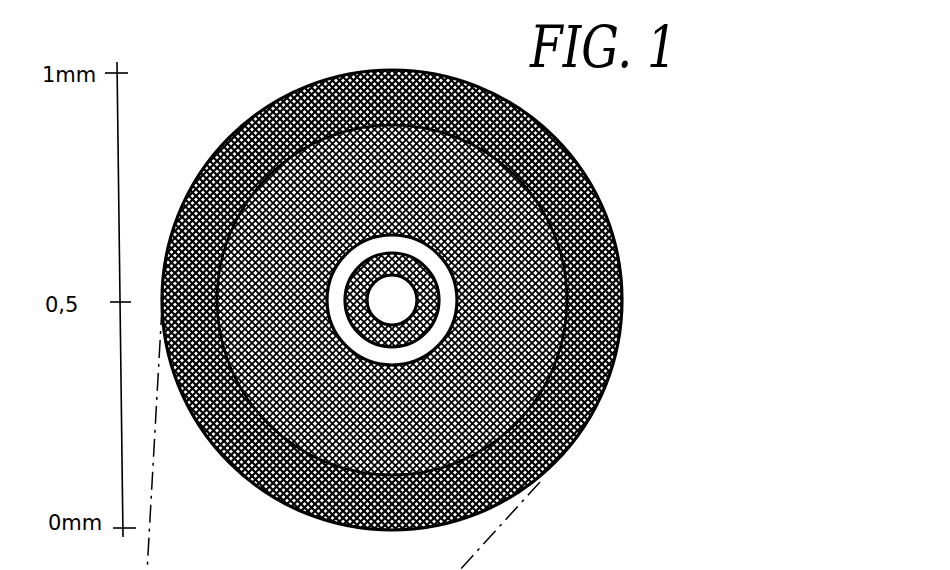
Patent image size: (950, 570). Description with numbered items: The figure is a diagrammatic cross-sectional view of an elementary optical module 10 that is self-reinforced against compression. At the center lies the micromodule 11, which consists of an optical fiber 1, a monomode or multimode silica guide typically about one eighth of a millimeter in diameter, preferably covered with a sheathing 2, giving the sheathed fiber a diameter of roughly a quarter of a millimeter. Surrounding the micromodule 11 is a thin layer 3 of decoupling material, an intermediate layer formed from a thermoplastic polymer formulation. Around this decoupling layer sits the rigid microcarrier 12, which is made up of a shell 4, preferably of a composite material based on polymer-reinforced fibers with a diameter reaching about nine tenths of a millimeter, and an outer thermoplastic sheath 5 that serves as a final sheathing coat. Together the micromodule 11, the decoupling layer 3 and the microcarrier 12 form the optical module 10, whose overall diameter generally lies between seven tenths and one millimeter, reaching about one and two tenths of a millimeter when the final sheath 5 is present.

The optical fiber 1 is at (652, 328).
The sheathing 2 is at (497, 303).
The thin layer of decoupling material 3 is at (485, 280).
The shell 4 is at (426, 300).
The thermoplastic sheath 5 is at (583, 168).
The optical module 10 is at (464, 300).
The micromodule 11 is at (522, 322).
The microcarrier 12 is at (428, 300).